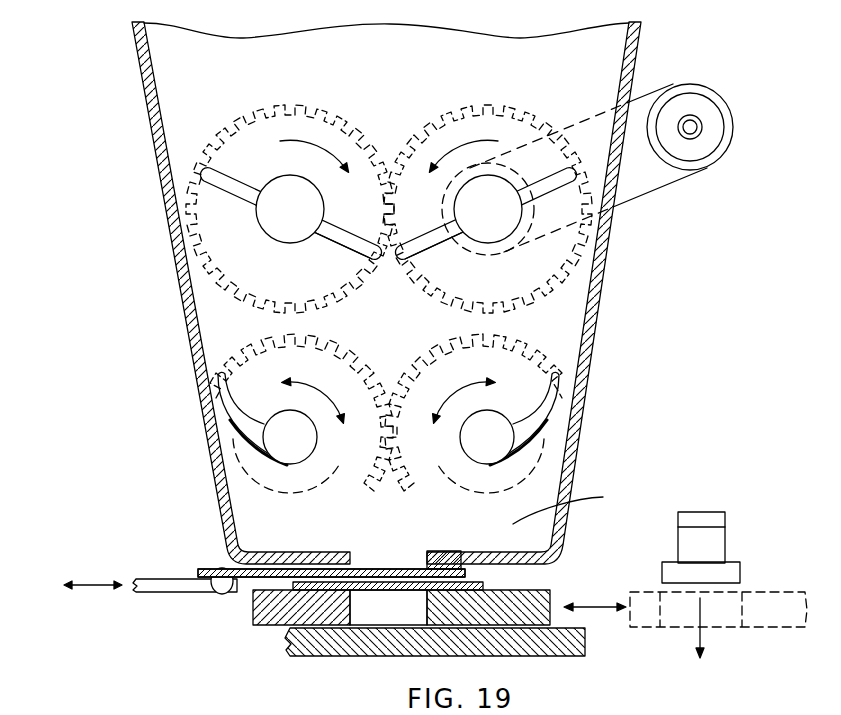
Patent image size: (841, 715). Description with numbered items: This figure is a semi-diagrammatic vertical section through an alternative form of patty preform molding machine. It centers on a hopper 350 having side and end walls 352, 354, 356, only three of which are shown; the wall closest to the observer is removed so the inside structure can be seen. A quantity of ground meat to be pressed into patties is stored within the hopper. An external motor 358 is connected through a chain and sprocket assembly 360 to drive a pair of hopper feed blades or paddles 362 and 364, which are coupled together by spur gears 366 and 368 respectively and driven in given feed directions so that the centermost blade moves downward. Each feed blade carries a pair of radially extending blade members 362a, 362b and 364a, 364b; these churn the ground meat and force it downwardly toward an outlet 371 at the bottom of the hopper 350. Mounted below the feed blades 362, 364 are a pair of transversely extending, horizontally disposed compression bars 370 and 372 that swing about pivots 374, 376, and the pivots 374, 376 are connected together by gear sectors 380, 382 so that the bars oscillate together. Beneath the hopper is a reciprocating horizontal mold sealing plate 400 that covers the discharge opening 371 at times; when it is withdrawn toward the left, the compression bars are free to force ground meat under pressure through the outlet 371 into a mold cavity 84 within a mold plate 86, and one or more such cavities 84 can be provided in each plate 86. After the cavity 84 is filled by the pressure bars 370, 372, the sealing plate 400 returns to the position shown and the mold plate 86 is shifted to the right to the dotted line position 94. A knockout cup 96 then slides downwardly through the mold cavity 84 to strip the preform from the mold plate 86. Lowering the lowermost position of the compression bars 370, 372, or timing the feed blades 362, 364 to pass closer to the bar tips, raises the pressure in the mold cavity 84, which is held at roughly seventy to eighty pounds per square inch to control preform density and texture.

The hopper 350 is at (166, 245).
The side wall 352 is at (183, 297).
The side wall 354 is at (592, 336).
The end wall 356 is at (585, 503).
The external motor 358 is at (733, 131).
The chain and sprocket assembly 360 is at (643, 190).
The hopper feed blade 362 is at (500, 228).
The blade member 362a is at (430, 236).
The blade member 362b is at (485, 187).
The hopper feed blade 364 is at (287, 226).
The blade member 364a is at (234, 191).
The blade member 364b is at (348, 233).
The spur gear 366 is at (470, 100).
The spur gear 368 is at (317, 100).
The compression bar 370 is at (232, 400).
The compression bar 372 is at (549, 400).
The pivot 374 is at (312, 439).
The pivot 376 is at (461, 443).
The gear sector 380 is at (358, 304).
The gear sector 382 is at (406, 369).
The mold sealing plate 400 is at (374, 566).
The outlet 371 is at (420, 562).
The mold cavity 84 is at (405, 622).
The mold plate 86 is at (538, 597).
The dotted line position 94 is at (778, 590).
The knockout cup 96 is at (731, 572).